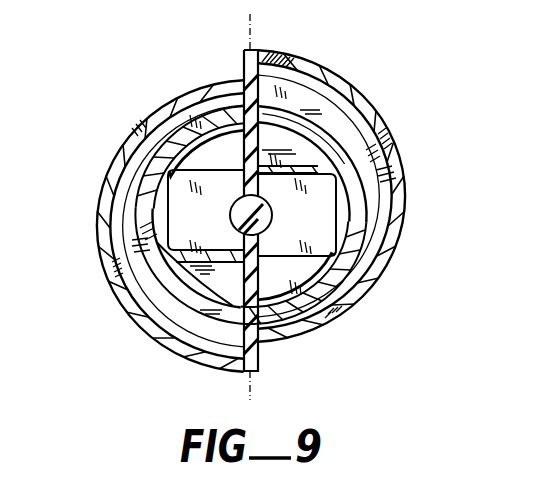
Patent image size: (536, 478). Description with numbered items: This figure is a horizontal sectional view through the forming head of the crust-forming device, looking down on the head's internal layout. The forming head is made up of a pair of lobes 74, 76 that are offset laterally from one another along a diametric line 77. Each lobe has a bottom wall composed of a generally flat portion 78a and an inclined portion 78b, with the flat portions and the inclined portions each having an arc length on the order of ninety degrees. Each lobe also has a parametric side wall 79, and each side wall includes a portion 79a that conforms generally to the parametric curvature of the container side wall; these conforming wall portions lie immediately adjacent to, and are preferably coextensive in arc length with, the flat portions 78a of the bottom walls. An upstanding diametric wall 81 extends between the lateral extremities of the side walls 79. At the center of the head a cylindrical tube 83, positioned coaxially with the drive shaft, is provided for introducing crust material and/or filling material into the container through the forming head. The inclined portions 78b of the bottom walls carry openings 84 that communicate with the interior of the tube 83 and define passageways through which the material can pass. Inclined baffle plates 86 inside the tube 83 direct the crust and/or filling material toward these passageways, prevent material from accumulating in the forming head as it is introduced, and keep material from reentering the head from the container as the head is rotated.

The lobe 74 is at (104, 218).
The lobe 76 is at (402, 221).
The diametric line 77 is at (250, 42).
The generally flat portion of bottom wall 78a is at (375, 120).
The inclined portion of bottom wall 78b is at (146, 124).
The parametric side wall 79 is at (118, 141).
The conforming portion of side wall 79a is at (120, 310).
The upstanding diametric wall 81 is at (281, 110).
The cylindrical tube 83 is at (228, 305).
The openings 84 is at (206, 171).
The inclined baffle plates 86 is at (212, 225).